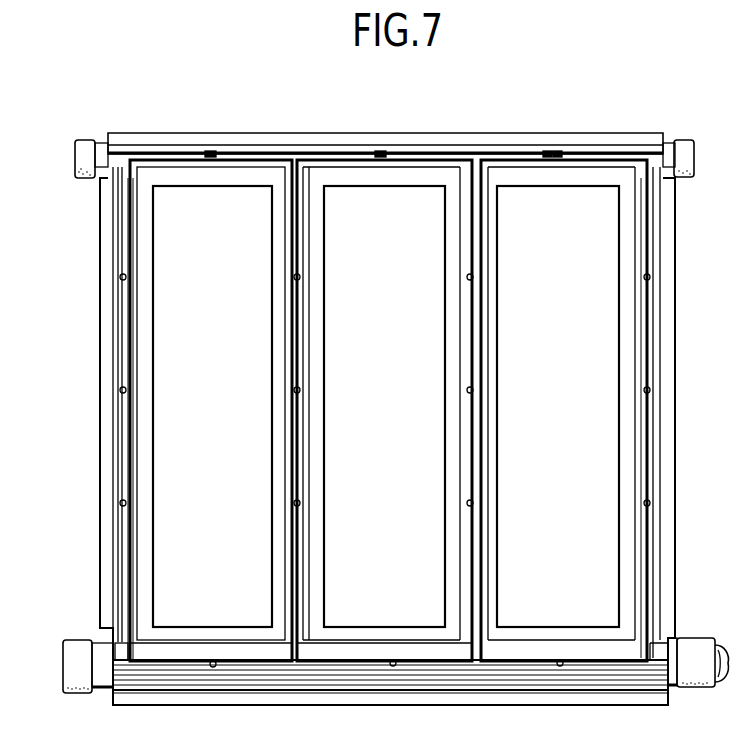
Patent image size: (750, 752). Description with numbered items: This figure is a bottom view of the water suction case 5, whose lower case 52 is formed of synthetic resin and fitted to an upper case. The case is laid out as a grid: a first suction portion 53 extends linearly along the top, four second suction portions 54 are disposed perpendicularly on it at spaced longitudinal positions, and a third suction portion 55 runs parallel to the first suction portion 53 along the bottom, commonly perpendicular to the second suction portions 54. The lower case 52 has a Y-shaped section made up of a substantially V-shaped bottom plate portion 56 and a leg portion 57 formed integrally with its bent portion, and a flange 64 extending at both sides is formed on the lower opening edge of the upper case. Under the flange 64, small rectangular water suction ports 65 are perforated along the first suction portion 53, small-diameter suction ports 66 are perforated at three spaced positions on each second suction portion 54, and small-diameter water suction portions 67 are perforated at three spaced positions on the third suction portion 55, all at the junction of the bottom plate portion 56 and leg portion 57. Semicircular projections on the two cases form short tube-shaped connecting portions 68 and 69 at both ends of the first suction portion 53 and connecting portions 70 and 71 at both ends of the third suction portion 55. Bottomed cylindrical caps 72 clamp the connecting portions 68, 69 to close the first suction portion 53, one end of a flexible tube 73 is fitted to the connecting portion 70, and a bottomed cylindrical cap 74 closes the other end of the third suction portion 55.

The suction case 5 is at (228, 126).
The lower case 52 is at (287, 151).
The first suction portion 53 is at (407, 151).
The second suction portions 54 is at (468, 500).
The third suction portion 55 is at (357, 650).
The bottom plate portion 56 is at (175, 652).
The leg portion 57 is at (245, 654).
The flange 64 is at (447, 322).
The water suction ports 65 is at (544, 150).
The small-diameter suction ports 66 is at (645, 275).
The small-diameter water suction portions 67 is at (560, 666).
The connecting portion 68 is at (667, 142).
The connecting portion 69 is at (105, 140).
The connecting portion 70 is at (673, 687).
The connecting portion 71 is at (100, 650).
The bottomed cylindrical caps 72 is at (80, 156).
The flexible tube 73 is at (714, 644).
The bottomed cylindrical cap 74 is at (67, 660).